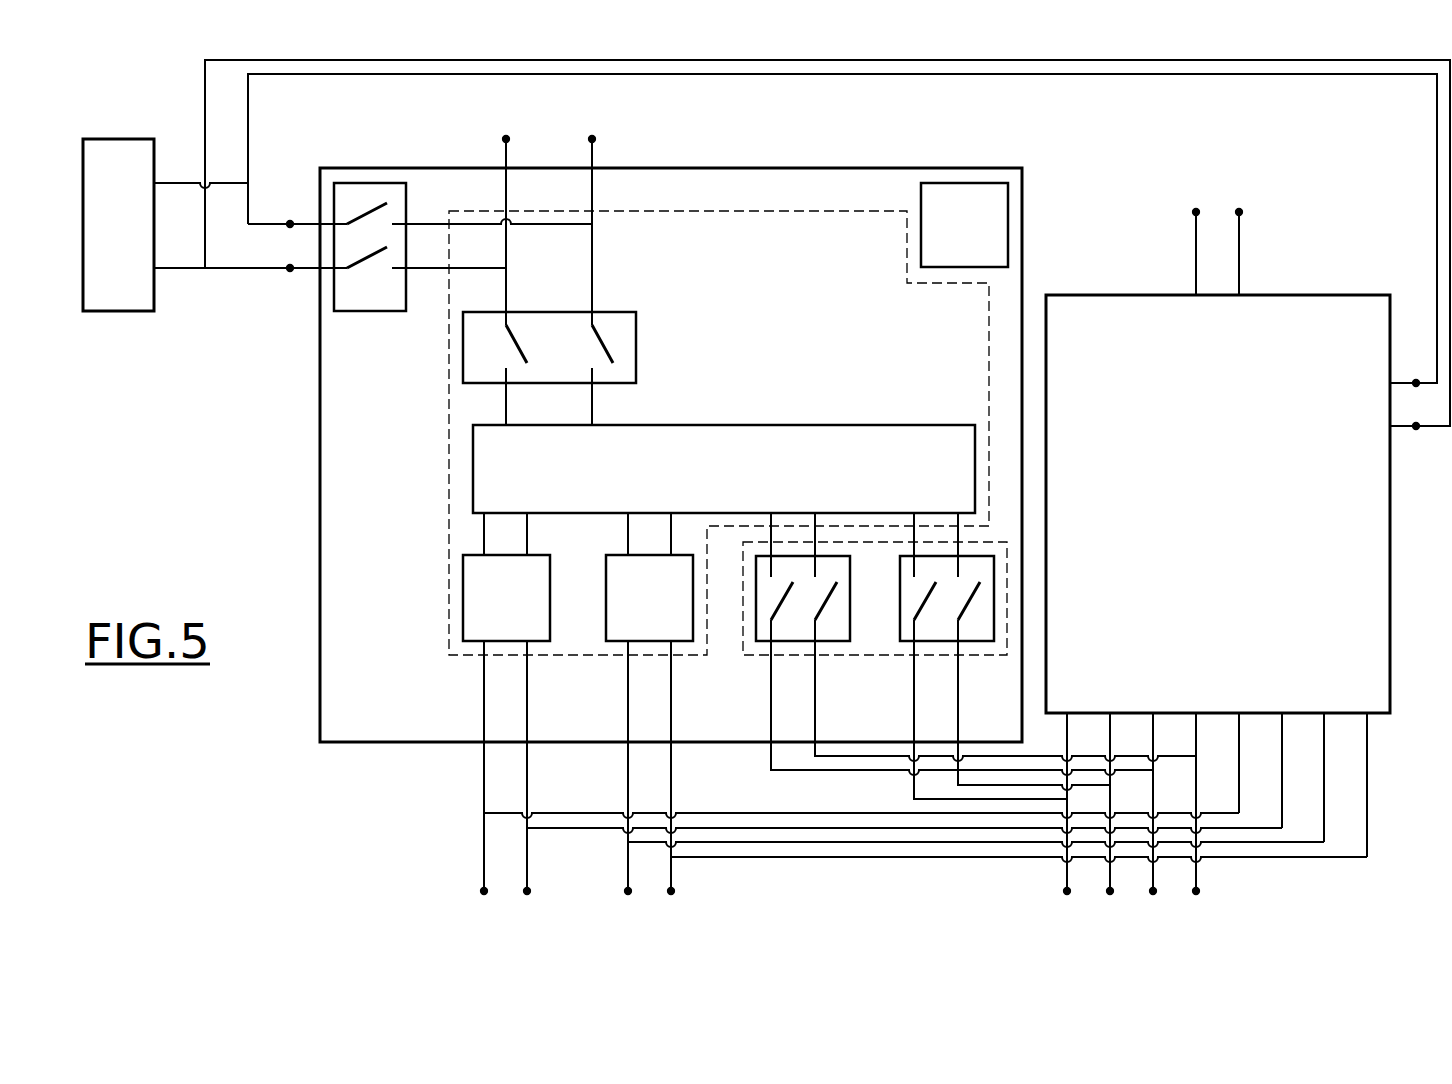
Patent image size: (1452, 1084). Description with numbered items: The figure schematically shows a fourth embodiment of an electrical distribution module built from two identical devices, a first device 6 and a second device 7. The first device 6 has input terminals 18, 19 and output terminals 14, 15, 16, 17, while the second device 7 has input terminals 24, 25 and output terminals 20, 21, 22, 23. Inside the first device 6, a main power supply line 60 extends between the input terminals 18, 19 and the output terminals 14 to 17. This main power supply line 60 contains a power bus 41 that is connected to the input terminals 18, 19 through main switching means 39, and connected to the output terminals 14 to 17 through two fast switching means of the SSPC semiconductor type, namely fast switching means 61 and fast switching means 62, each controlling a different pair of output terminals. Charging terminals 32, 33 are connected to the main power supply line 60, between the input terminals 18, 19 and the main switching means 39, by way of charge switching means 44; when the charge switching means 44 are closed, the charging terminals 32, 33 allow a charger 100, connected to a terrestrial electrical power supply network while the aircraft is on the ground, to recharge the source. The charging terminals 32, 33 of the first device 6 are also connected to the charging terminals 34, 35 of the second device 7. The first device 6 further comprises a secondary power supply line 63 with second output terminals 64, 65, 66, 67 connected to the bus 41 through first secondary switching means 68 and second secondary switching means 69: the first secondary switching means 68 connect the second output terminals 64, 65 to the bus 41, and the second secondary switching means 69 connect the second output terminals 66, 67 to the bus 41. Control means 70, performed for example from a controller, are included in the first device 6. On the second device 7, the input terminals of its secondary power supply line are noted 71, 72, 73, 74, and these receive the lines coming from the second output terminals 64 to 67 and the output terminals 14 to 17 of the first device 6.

The charger 100 is at (118, 136).
The first device 6 is at (310, 455).
The second device 7 is at (1400, 549).
The output terminal 14 is at (484, 896).
The output terminal 15 is at (527, 896).
The output terminal 16 is at (628, 896).
The output terminal 17 is at (671, 896).
The input terminal 18 is at (506, 136).
The input terminal 19 is at (592, 136).
The output terminal 20 is at (1067, 896).
The output terminal 21 is at (1110, 896).
The output terminal 22 is at (1153, 896).
The output terminal 23 is at (1196, 896).
The input terminal 24 is at (1196, 209).
The input terminal 25 is at (1239, 209).
The charging terminal 32 is at (290, 221).
The charging terminal 33 is at (290, 272).
The charging terminal 34 is at (1416, 380).
The charging terminal 35 is at (1416, 430).
The main switching means 39 is at (452, 345).
The power bus 41 is at (724, 469).
The charge switching means 44 is at (367, 178).
The main power supply line 60 is at (438, 514).
The fast switching means 61 is at (506, 577).
The fast switching means 62 is at (649, 577).
The secondary power supply line 63 is at (878, 666).
The second output terminal 64 is at (771, 742).
The second output terminal 65 is at (815, 742).
The second output terminal 66 is at (914, 742).
The second output terminal 67 is at (958, 742).
The first secondary switching means 68 is at (843, 641).
The second secondary switching means 69 is at (986, 641).
The control means 70 is at (964, 225).
The input terminal of the secondary power supply line 71 is at (1239, 711).
The input terminal of the secondary power supply line 72 is at (1282, 711).
The input terminal of the secondary power supply line 73 is at (1324, 711).
The input terminal of the secondary power supply line 74 is at (1367, 711).